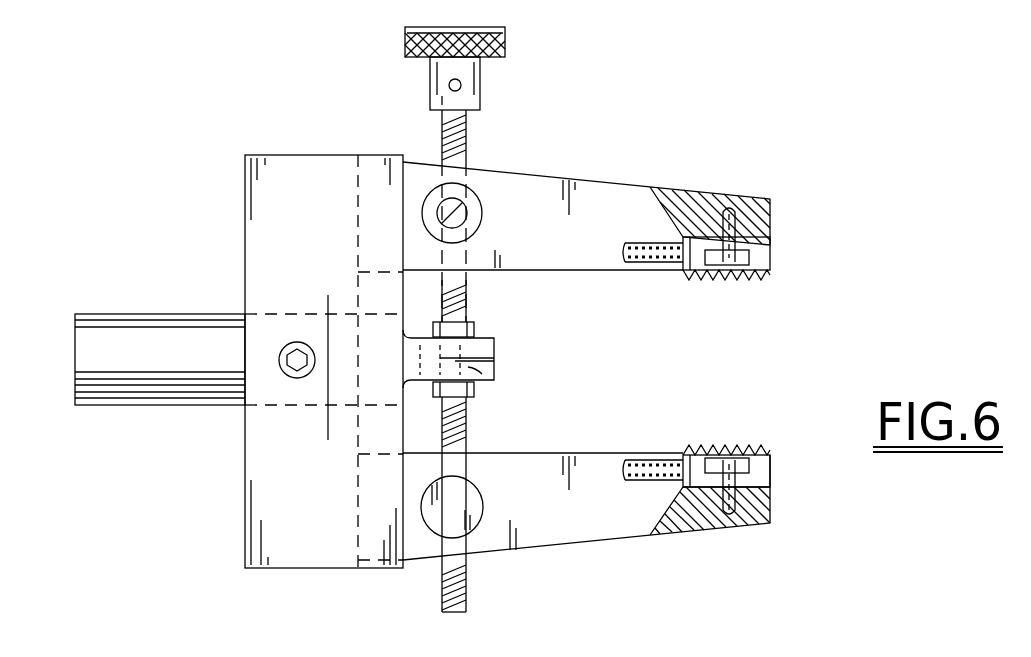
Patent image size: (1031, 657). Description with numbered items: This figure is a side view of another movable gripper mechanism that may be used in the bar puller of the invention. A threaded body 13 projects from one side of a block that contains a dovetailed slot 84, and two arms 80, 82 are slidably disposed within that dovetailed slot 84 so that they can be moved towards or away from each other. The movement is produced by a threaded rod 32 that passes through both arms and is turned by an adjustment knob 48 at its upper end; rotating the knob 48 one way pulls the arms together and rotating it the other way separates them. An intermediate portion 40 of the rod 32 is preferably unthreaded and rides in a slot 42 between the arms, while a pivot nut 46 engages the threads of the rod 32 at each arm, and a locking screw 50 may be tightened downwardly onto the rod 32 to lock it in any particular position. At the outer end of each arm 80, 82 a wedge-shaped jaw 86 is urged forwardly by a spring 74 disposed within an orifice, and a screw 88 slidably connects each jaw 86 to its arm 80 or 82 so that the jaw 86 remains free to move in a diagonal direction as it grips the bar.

The threaded body 13 is at (138, 313).
The threaded rod 32 is at (470, 135).
The intermediate portion of rod 40 is at (480, 376).
The slot 42 is at (476, 330).
The pivot nut 46 is at (478, 205).
The adjustment knob 48 is at (500, 30).
The locking screw 50 is at (468, 217).
The spring 74 is at (654, 264).
The arm 80 is at (765, 195).
The arm 82 is at (768, 508).
The dovetailed slot 84 is at (375, 568).
The wedge-shaped jaw 86 is at (772, 262).
The screw 88 is at (738, 216).